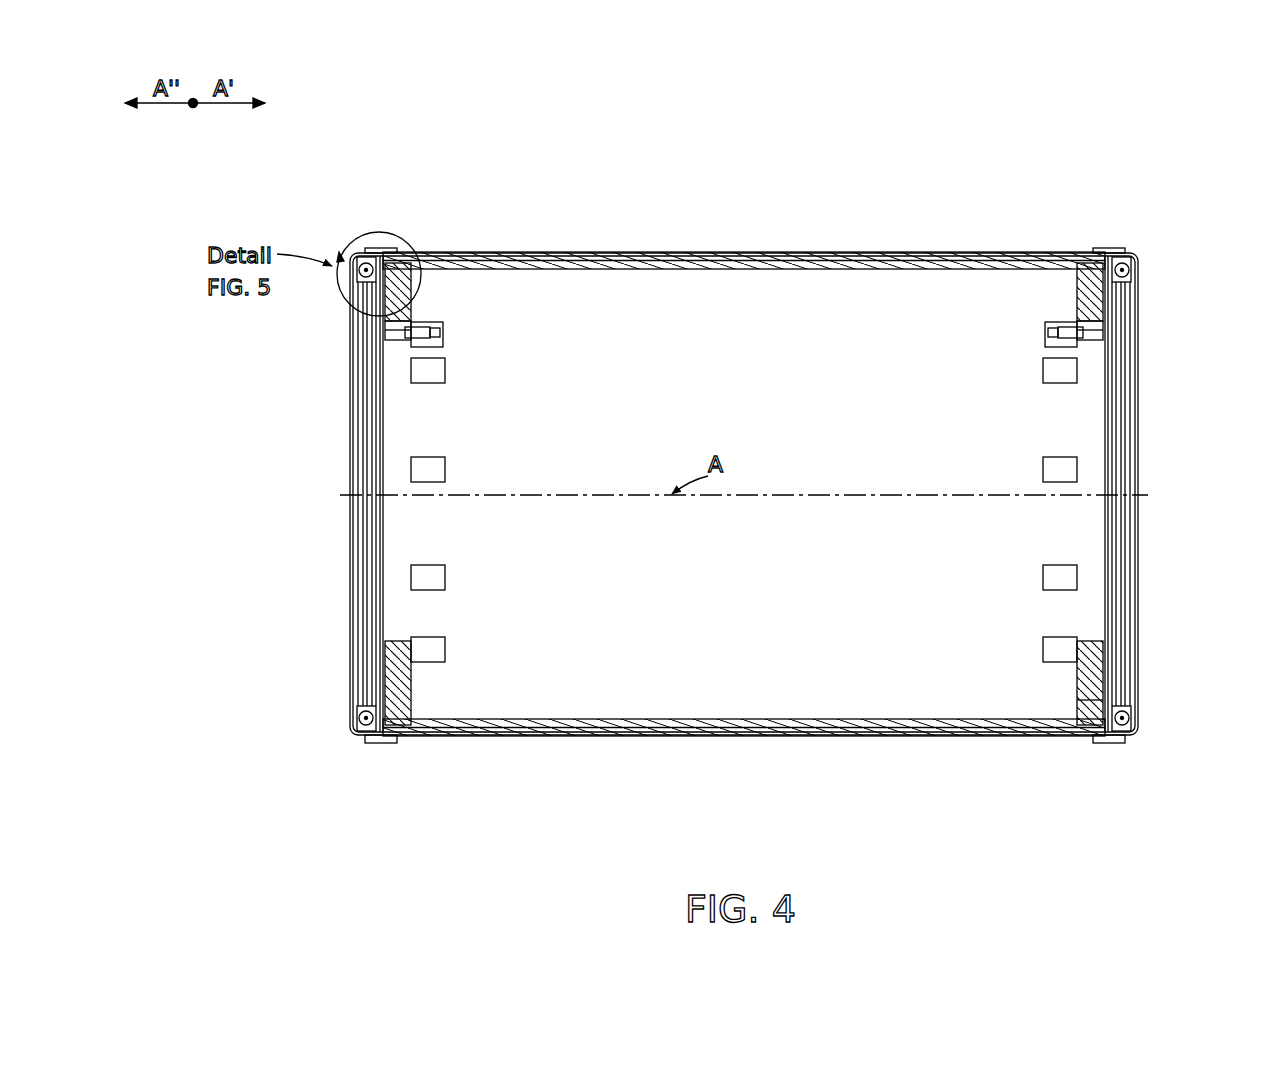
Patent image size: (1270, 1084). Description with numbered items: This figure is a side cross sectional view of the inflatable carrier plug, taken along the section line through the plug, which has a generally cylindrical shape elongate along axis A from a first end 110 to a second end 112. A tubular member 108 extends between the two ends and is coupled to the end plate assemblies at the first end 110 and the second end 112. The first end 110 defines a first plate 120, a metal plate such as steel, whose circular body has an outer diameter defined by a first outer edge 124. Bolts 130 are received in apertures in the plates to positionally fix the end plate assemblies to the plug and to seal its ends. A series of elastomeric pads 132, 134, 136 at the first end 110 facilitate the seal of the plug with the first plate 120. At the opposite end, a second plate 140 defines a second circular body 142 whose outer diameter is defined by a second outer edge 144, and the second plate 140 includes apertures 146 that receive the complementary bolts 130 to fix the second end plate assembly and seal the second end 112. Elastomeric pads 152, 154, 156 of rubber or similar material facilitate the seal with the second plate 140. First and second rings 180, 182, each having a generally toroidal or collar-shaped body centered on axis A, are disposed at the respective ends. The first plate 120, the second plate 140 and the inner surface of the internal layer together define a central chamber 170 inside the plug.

The tubular member 108 is at (860, 250).
The first end 110 is at (377, 233).
The second end 112 is at (1108, 250).
The first plate 120 is at (397, 662).
The first outer edge 124 is at (400, 260).
The bolts 130 is at (437, 330).
The elastomeric pad 132 is at (382, 420).
The elastomeric pad 134 is at (377, 437).
The elastomeric pad 136 is at (372, 482).
The second plate 140 is at (1092, 668).
The second circular body 142 is at (1092, 712).
The second outer edge 144 is at (1100, 258).
The apertures 146 is at (1110, 310).
The elastomeric pad 152 is at (1100, 432).
The elastomeric pad 154 is at (1113, 432).
The elastomeric pad 156 is at (1132, 470).
The central chamber 170 is at (703, 325).
The first ring 180 is at (365, 268).
The second ring 182 is at (1123, 268).